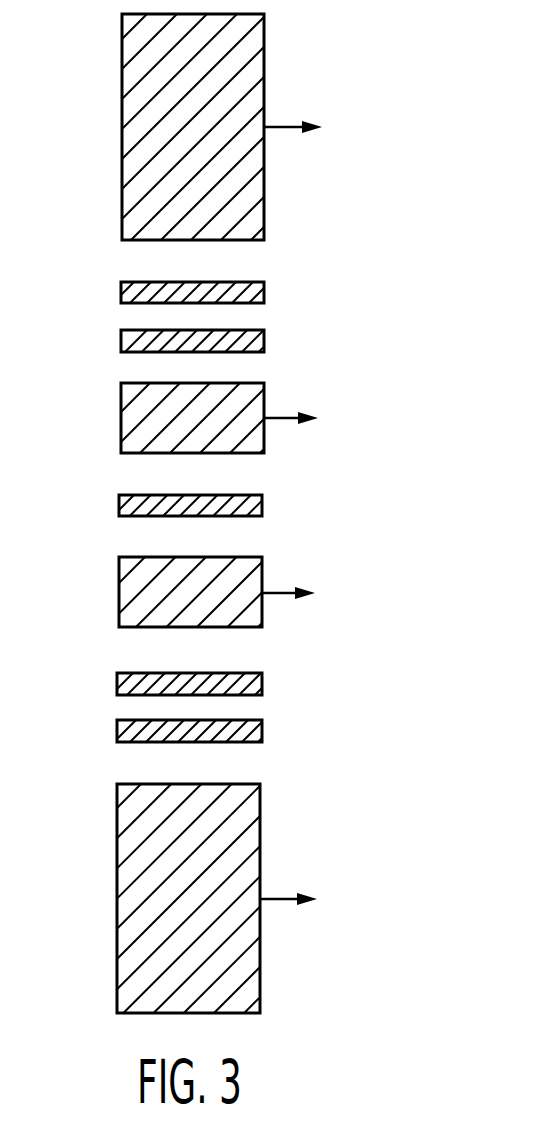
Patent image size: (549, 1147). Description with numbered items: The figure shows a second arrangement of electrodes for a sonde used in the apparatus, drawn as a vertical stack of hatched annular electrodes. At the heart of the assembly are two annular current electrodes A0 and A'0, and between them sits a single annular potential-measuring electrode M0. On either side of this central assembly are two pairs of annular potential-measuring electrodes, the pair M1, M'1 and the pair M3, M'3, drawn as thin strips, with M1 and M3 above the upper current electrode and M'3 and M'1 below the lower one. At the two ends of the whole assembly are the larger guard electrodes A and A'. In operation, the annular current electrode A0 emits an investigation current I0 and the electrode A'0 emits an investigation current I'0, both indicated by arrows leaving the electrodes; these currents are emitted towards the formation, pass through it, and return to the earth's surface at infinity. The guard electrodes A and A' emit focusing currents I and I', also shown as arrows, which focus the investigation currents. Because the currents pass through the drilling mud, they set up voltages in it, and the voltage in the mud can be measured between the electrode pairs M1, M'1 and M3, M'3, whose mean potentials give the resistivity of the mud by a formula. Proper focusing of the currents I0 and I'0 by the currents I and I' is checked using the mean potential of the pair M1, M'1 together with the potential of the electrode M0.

The guard electrode A is at (154, 127).
The focusing current I is at (293, 111).
The annular potential-measuring electrode M1 is at (122, 287).
The annular potential-measuring electrode M3 is at (122, 343).
The annular current electrode A0 is at (128, 417).
The investigation current I0 is at (300, 383).
The annular potential-measuring electrode M0 is at (127, 502).
The annular current electrode A'0 is at (142, 592).
The investigation current I'0 is at (295, 570).
The annular potential-measuring electrode M'3 is at (142, 687).
The annular potential-measuring electrode M'1 is at (142, 740).
The guard electrode A' is at (141, 898).
The focusing current I' is at (292, 880).